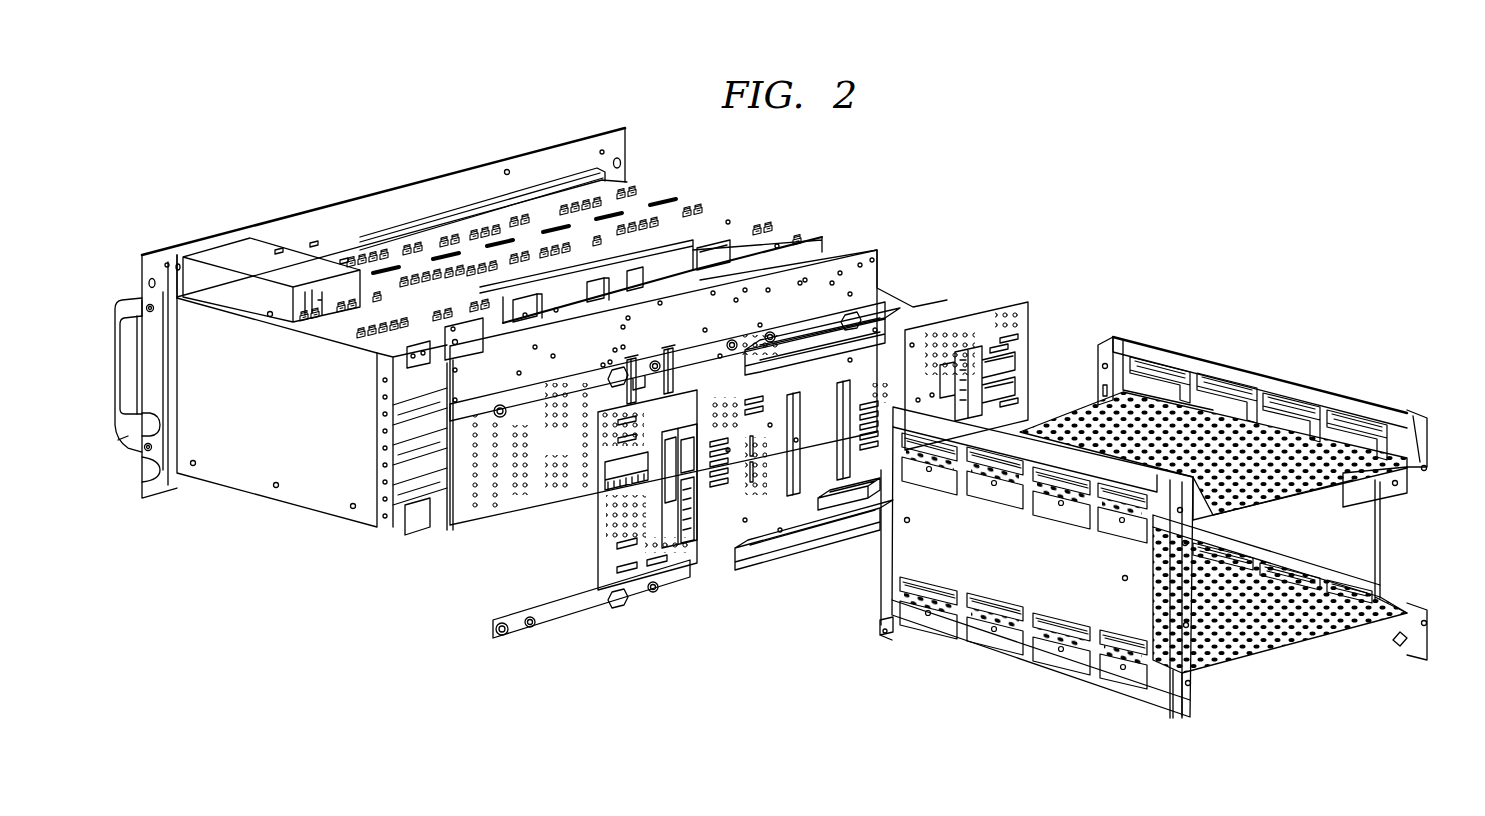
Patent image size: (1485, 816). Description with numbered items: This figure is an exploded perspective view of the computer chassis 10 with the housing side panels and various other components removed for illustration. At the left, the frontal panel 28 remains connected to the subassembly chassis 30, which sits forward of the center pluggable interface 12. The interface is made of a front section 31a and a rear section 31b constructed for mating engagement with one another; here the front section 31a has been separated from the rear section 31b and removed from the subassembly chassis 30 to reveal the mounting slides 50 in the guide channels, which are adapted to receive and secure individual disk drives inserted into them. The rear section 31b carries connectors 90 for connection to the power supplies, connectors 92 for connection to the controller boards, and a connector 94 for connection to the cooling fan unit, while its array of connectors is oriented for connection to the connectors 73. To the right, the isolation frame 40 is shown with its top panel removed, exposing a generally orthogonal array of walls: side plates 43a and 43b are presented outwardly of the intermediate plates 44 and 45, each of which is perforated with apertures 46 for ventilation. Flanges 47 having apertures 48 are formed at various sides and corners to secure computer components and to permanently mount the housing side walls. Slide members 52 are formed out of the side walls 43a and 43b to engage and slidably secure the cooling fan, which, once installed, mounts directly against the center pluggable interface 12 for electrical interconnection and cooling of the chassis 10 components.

The chassis 10 is at (1020, 178).
The center pluggable interface 12 is at (598, 527).
The frontal panel 28 is at (470, 180).
The subassembly chassis 30 is at (682, 200).
The front section 31a is at (875, 255).
The rear section 31b is at (1020, 332).
The isolation frame 40 is at (1159, 498).
The side plate 43a is at (1012, 564).
The side plate 43b is at (1383, 528).
The intermediate plate 44 is at (1280, 440).
The intermediate plate 45 is at (1265, 648).
The apertures 46 is at (1205, 410).
The flanges 47 is at (1110, 350).
The apertures 48 is at (1098, 370).
The mounting slides 50 is at (427, 548).
The slide members 52 is at (1340, 592).
The connectors 73 is at (668, 349).
The connectors 90 is at (963, 345).
The connectors 92 is at (812, 345).
The connector 94 is at (812, 503).